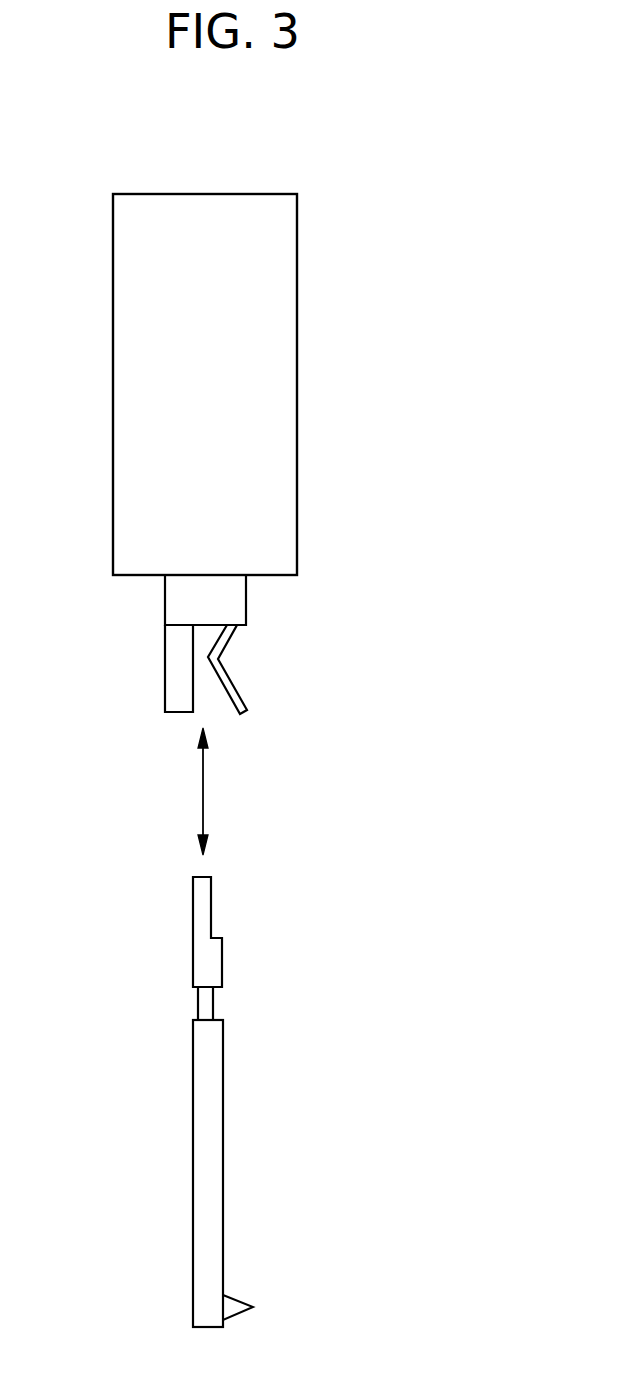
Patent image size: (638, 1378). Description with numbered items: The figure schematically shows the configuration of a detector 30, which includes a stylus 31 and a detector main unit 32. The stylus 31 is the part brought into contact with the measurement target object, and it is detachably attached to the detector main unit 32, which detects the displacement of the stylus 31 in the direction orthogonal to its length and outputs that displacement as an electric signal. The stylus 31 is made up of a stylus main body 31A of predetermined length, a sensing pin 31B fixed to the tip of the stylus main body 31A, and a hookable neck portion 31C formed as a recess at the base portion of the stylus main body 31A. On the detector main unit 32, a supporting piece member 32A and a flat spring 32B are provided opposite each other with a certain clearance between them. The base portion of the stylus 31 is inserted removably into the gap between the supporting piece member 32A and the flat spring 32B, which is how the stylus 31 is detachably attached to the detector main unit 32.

The detector 30 is at (384, 165).
The stylus 31 is at (193, 1183).
The stylus main body 31A is at (218, 1107).
The sensing pin 31B is at (243, 1297).
The hookable neck portion 31C is at (210, 1003).
The detector main unit 32 is at (124, 387).
The supporting piece member 32A is at (168, 680).
The flat spring 32B is at (243, 686).